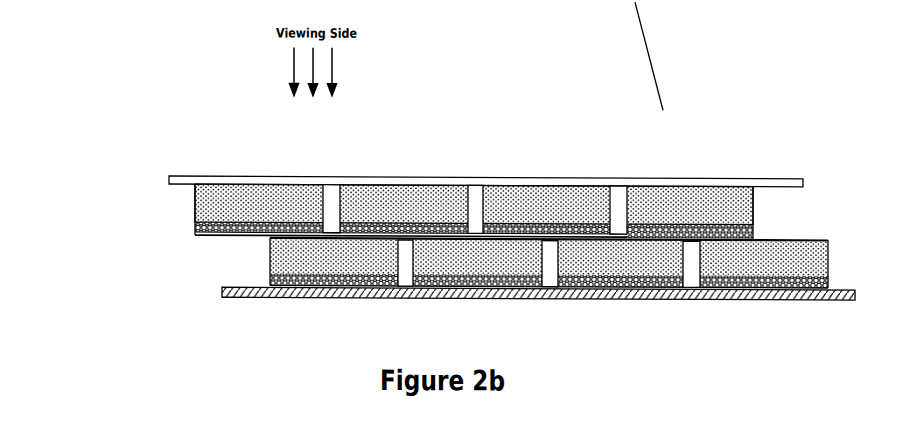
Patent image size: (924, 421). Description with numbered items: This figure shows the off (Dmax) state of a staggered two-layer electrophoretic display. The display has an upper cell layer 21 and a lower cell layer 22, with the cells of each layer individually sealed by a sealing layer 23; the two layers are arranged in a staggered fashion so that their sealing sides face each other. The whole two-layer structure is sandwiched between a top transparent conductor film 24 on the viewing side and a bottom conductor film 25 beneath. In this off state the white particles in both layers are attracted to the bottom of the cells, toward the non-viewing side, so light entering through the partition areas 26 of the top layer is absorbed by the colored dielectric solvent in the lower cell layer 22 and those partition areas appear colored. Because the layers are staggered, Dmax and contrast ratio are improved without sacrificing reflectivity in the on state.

The upper cell layer 21 is at (737, 186).
The lower cell layer 22 is at (482, 263).
The sealing layer 23 is at (261, 244).
The top transparent conductor film 24 is at (229, 172).
The bottom conductor film 25 is at (235, 305).
The partition areas 26 is at (624, 183).